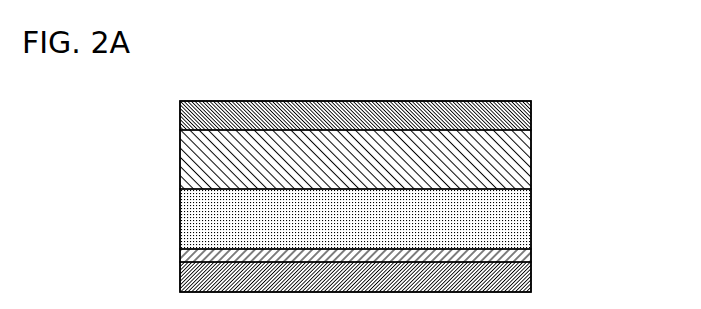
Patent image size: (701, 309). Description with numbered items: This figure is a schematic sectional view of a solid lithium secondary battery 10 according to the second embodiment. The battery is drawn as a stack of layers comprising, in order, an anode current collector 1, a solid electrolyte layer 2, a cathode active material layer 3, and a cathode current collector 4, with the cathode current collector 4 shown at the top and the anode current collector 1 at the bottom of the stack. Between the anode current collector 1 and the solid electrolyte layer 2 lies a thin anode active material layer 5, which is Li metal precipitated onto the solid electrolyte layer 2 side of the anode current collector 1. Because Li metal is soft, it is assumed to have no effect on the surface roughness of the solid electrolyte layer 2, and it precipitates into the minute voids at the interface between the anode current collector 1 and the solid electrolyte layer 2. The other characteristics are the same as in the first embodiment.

The solid lithium secondary battery 10 is at (513, 87).
The cathode current collector 4 is at (515, 115).
The cathode active material layer 3 is at (517, 160).
The solid electrolyte layer 2 is at (517, 219).
The anode active material layer 5 is at (517, 257).
The anode current collector 1 is at (517, 277).